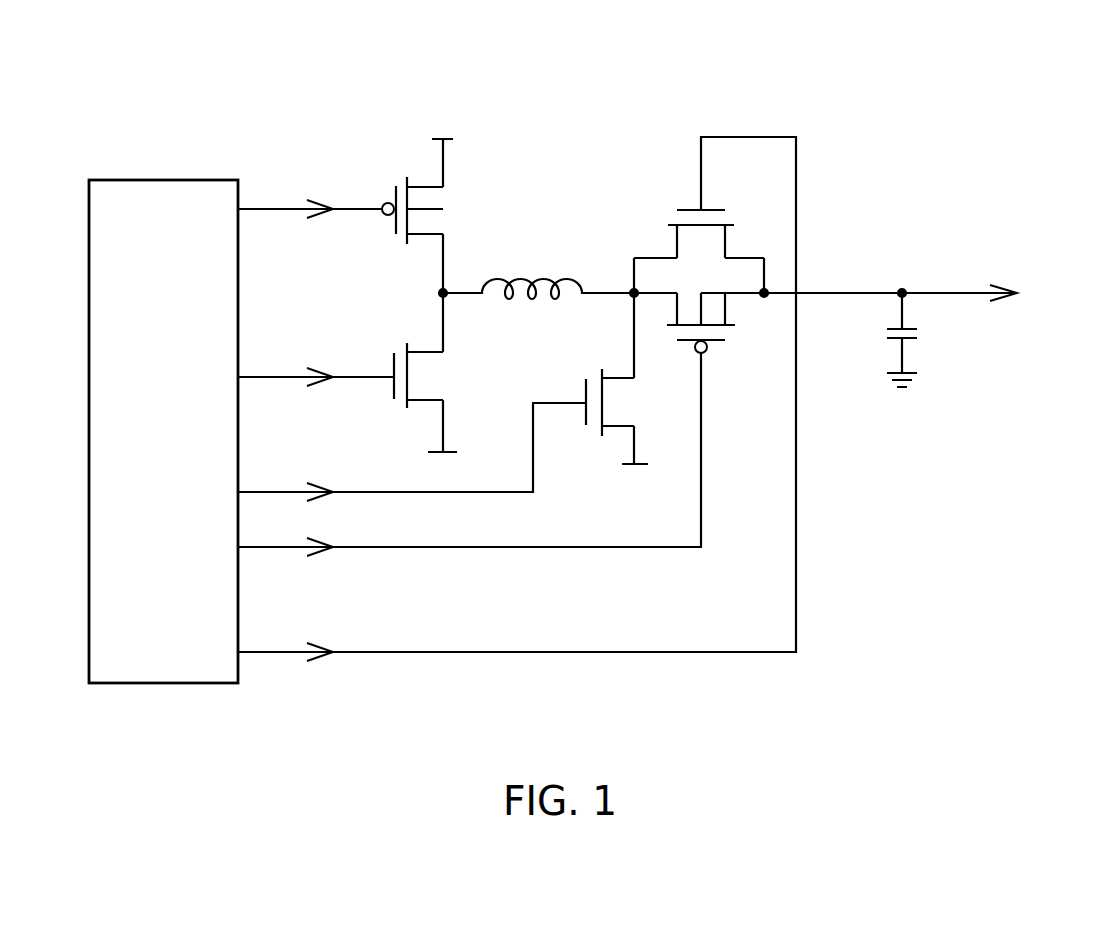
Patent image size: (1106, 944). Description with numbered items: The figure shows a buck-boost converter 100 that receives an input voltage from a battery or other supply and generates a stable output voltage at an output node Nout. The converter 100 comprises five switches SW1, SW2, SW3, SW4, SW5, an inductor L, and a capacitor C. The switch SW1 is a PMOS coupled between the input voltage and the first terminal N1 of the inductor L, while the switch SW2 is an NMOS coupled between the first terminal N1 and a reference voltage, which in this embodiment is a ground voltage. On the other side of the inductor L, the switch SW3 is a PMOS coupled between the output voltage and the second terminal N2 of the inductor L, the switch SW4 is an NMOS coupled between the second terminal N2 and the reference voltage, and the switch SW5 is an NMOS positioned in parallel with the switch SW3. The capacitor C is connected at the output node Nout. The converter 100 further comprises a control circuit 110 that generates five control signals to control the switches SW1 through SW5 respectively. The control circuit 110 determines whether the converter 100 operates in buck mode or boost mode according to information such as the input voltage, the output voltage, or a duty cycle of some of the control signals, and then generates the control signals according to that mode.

The buck-boost converter 100 is at (955, 104).
The control circuit 110 is at (163, 180).
The switch SW1 is at (442, 201).
The switch SW2 is at (435, 390).
The switch SW3 is at (719, 336).
The switch SW4 is at (630, 395).
The switch SW5 is at (697, 236).
The inductor L is at (538, 276).
The capacitor C is at (912, 340).
The first terminal of the inductor N1 is at (424, 294).
The second terminal of the inductor N2 is at (617, 307).
The output node Nout is at (907, 278).